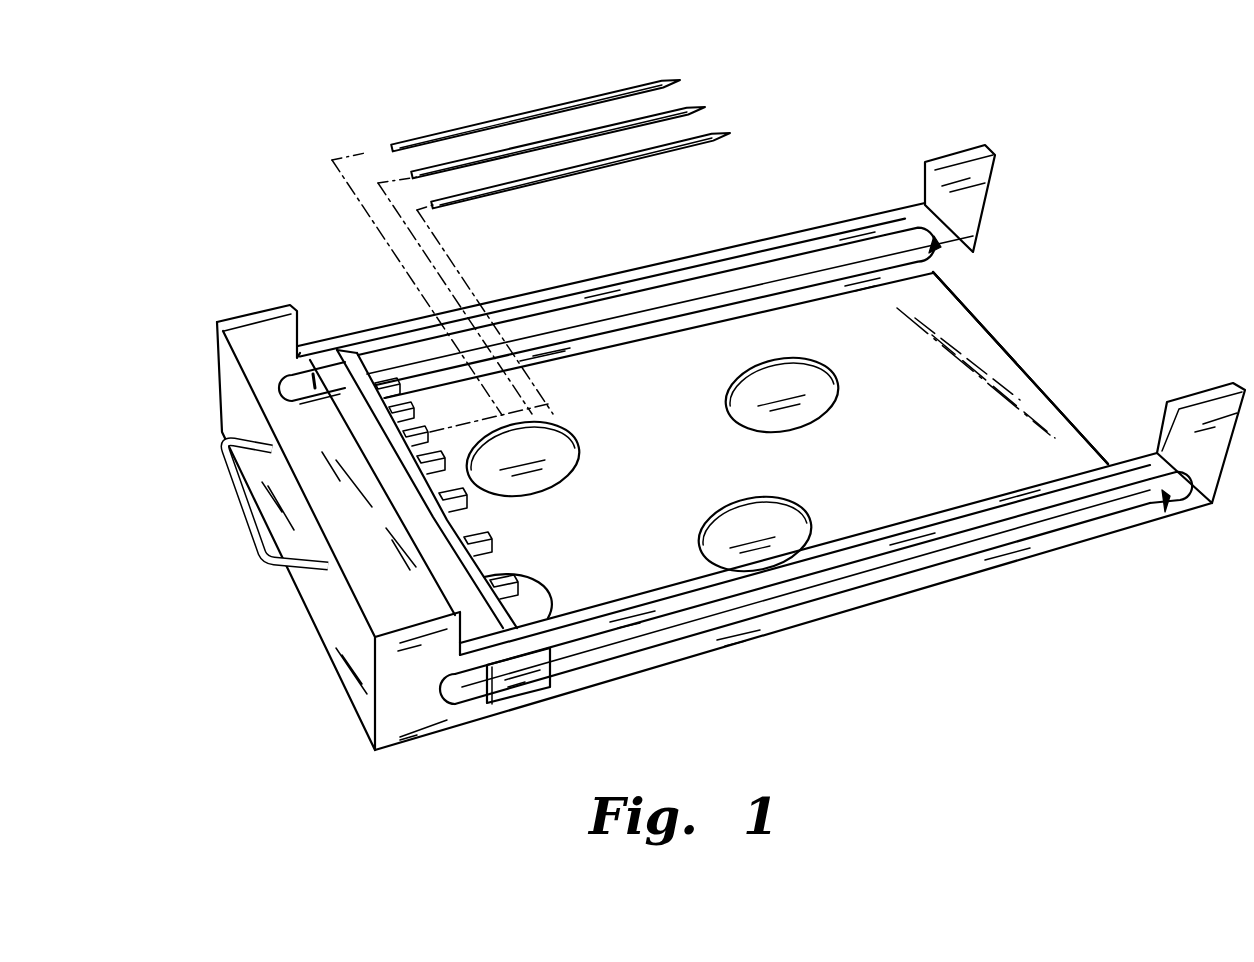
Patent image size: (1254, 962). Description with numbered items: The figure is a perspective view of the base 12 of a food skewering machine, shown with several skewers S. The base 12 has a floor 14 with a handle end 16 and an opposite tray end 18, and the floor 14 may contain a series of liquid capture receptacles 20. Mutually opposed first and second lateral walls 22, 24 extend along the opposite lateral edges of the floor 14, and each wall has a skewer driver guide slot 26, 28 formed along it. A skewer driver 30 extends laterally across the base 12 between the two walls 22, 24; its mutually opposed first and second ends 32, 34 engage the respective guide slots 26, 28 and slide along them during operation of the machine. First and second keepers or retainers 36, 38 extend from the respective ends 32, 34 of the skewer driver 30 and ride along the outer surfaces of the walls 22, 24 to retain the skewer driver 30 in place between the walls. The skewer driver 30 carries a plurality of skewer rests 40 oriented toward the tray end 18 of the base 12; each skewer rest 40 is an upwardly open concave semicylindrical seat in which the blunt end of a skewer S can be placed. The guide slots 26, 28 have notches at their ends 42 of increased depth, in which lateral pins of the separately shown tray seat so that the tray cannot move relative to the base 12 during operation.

The skewer S is at (497, 188).
The base 12 is at (975, 697).
The floor 14 is at (881, 468).
The handle end 16 is at (322, 634).
The tray end 18 is at (1026, 367).
The liquid capture receptacles 20 is at (547, 612).
The first lateral wall 22 is at (798, 620).
The second lateral wall 24 is at (603, 278).
The skewer driver guide slot 26 is at (697, 617).
The skewer driver guide slot 28 is at (697, 292).
The skewer driver 30 is at (350, 423).
The first end 32 is at (487, 652).
The second end 34 is at (360, 352).
The first keeper or retainer 36 is at (528, 697).
The second keeper or retainer 38 is at (322, 372).
The skewer rests 40 is at (403, 400).
The ends of the slots 42 is at (938, 242).